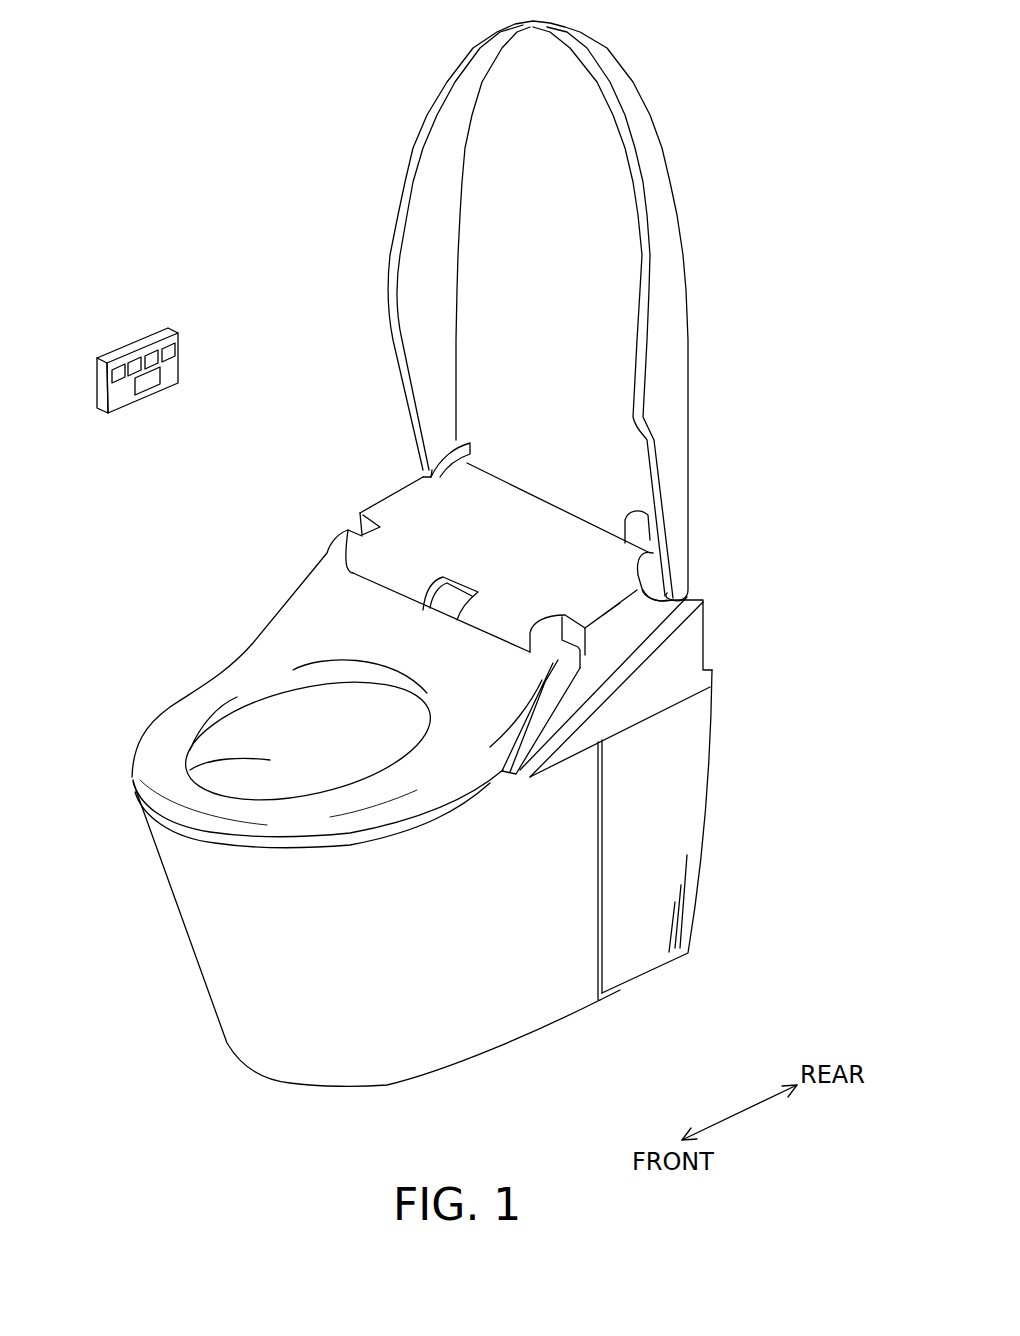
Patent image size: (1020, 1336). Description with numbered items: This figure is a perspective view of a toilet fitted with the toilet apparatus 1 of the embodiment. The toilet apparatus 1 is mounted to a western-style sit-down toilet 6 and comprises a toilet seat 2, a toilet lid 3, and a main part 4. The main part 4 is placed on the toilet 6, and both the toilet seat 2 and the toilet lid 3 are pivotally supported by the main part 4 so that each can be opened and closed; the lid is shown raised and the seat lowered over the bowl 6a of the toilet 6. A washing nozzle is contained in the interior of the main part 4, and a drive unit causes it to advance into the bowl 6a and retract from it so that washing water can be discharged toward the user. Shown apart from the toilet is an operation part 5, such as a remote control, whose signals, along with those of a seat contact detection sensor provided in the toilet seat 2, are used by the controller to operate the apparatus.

The toilet apparatus 1 is at (323, 310).
The toilet seat 2 is at (175, 723).
The toilet lid 3 is at (700, 288).
The main part 4 is at (685, 640).
The operation part 5 is at (140, 348).
The toilet 6 is at (217, 987).
The bowl 6a is at (195, 770).